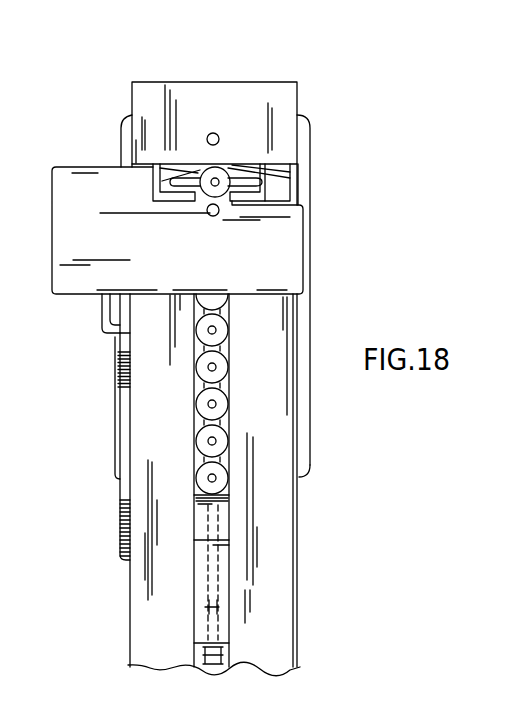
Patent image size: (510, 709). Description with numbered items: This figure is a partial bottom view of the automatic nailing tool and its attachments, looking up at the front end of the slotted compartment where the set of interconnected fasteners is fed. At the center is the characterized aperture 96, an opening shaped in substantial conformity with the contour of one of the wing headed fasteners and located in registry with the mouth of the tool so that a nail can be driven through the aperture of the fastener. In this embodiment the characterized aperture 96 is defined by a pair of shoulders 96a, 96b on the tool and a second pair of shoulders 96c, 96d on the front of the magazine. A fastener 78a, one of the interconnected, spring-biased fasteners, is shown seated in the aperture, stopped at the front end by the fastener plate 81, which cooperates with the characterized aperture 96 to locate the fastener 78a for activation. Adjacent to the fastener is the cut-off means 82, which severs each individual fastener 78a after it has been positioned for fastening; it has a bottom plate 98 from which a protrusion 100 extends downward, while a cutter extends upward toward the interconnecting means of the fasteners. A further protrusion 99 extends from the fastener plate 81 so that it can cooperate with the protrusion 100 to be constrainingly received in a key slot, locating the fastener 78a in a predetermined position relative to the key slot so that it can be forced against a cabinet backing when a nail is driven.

The fastener 78a is at (217, 167).
The fastener plate 81 is at (246, 126).
The cut-off means 82 is at (295, 255).
The characterized aperture 96 is at (244, 181).
The shoulder 96a is at (172, 178).
The shoulder 96b is at (262, 173).
The shoulder 96c is at (157, 196).
The shoulder 96d is at (248, 189).
The bottom plate 98 is at (170, 263).
The protrusion 99 is at (211, 133).
The protrusion 100 is at (217, 216).